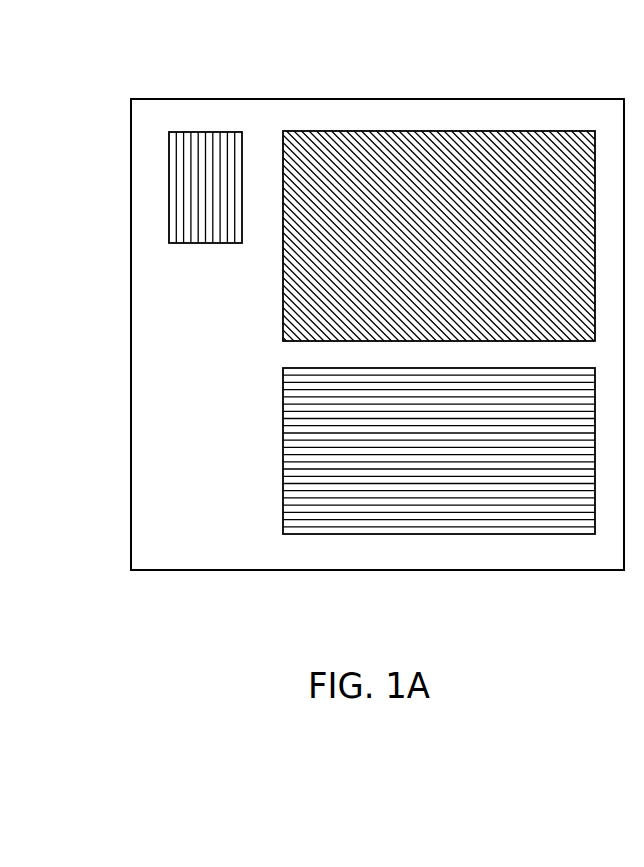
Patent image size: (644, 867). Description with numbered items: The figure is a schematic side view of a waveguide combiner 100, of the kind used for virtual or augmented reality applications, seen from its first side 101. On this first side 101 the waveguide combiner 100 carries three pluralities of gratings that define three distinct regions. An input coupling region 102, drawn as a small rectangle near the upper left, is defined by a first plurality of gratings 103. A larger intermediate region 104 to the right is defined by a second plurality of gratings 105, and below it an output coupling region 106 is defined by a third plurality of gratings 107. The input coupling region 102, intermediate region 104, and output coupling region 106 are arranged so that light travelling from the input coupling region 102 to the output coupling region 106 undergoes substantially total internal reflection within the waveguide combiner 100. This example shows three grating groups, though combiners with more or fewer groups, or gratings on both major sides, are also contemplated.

The waveguide combiner 100 is at (160, 56).
The first side 101 is at (173, 331).
The input coupling region 102 is at (169, 163).
The first plurality of gratings 103 is at (188, 198).
The intermediate region 104 is at (468, 131).
The second plurality of gratings 105 is at (536, 155).
The output coupling region 106 is at (365, 534).
The third plurality of gratings 107 is at (445, 505).